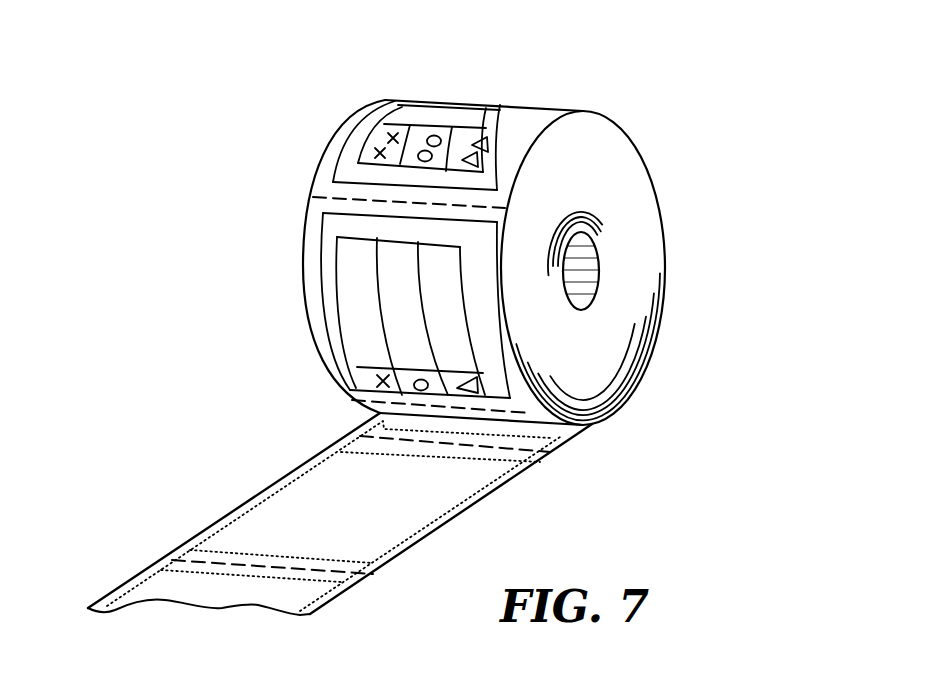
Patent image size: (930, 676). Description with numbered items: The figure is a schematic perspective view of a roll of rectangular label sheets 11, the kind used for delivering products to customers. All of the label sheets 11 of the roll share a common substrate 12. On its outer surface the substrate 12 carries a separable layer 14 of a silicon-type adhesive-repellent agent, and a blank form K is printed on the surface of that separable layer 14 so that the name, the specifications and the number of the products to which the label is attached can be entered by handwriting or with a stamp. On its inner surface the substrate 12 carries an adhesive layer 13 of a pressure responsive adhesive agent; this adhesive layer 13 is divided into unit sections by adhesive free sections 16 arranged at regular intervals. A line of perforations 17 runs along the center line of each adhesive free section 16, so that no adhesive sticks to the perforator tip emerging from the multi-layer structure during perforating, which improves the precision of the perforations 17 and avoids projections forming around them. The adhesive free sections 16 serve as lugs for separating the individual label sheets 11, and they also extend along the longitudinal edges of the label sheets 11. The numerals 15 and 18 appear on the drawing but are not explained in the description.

The label sheet 11 is at (668, 149).
The substrate 12 is at (340, 600).
The adhesive layer 13 is at (464, 507).
The separable layer 14 is at (329, 165).
The label body 15 is at (342, 470).
The adhesive free section 16 is at (320, 563).
The line of perforations 17 is at (372, 198).
The label border 18 is at (395, 100).
The blank form K is at (483, 136).